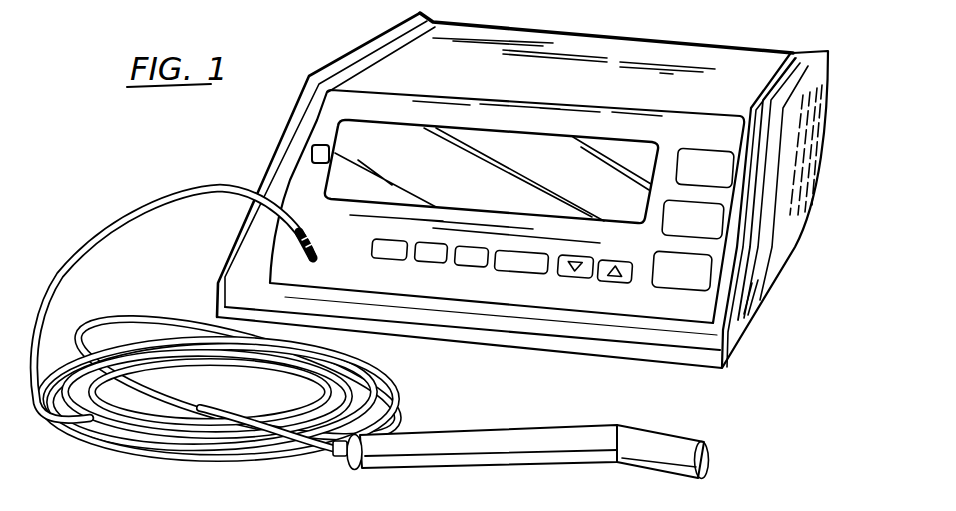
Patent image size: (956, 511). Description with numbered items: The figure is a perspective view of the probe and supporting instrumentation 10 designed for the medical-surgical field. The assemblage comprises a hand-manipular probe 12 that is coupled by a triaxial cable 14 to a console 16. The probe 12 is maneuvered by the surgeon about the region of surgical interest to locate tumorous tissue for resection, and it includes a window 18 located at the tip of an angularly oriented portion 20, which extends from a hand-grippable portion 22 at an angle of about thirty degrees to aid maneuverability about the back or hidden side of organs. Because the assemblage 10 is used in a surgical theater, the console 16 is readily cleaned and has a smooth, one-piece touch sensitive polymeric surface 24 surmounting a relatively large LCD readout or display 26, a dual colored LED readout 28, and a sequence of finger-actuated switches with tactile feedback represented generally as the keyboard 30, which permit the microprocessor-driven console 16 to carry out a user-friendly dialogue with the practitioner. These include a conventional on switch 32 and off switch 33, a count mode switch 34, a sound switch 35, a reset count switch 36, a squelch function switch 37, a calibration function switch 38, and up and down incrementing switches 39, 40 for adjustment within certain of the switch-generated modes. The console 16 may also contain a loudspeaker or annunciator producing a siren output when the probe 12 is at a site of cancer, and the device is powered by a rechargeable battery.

The probe and supporting instrumentation 10 is at (683, 38).
The hand-manipular probe 12 is at (546, 453).
The triaxial cable 14 is at (112, 233).
The console 16 is at (751, 305).
The window 18 is at (708, 461).
The angularly oriented portion 20 is at (648, 474).
The hand-grippable portion 22 is at (462, 458).
The touch sensitive polymeric surface 24 is at (542, 43).
The LCD readout or display 26 is at (496, 143).
The dual colored LED readout 28 is at (312, 152).
The switches or keyboard 30 is at (573, 243).
The on switch 32 is at (431, 263).
The off switch 33 is at (389, 260).
The count mode switch 34 is at (662, 212).
The sound switch 35 is at (668, 290).
The reset count switch 36 is at (708, 150).
The squelch function switch 37 is at (518, 273).
The calibration function switch 38 is at (470, 267).
The up incrementing switch 39 is at (612, 283).
The down incrementing switch 40 is at (572, 278).